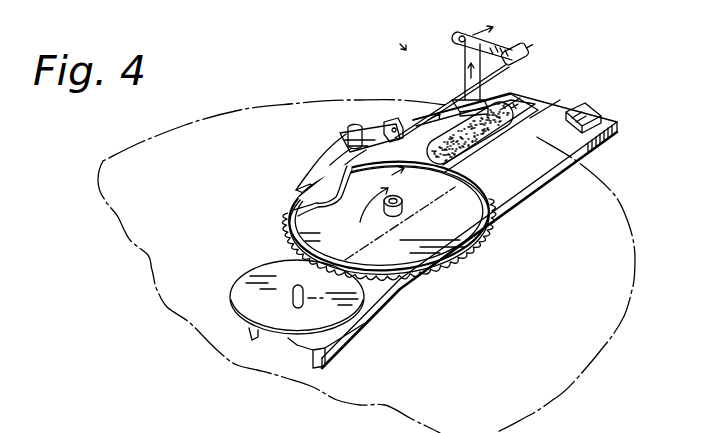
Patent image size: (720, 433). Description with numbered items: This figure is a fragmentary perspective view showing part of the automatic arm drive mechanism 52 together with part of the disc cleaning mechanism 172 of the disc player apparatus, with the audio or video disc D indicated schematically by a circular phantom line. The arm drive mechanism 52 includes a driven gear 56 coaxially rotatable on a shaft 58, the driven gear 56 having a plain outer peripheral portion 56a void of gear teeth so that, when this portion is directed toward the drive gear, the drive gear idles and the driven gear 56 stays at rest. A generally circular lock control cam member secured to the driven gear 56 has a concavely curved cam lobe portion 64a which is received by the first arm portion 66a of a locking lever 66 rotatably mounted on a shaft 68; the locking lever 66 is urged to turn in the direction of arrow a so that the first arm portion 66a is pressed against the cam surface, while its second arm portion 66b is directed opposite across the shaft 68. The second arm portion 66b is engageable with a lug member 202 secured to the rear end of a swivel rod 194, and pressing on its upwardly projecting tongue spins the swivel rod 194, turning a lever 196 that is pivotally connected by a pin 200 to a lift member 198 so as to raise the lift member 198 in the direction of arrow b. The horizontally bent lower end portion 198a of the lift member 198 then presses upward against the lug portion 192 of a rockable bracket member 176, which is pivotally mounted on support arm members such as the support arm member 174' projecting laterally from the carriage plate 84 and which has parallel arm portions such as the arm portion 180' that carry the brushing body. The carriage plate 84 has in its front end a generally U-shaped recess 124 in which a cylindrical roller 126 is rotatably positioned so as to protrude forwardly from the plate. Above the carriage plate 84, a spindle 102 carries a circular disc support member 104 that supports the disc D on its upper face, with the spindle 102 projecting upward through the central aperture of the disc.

The disc cleaning mechanism 172 is at (400, 44).
The lift member 198 is at (458, 62).
The pin 200 is at (482, 30).
The lever 196 is at (508, 48).
The lug portion 192 is at (512, 90).
The arm portion 180' is at (539, 84).
The support arm member 174' is at (576, 85).
The cylindrical roller 126 is at (582, 116).
The U-shaped recess 124 is at (590, 120).
The carriage plate 84 is at (600, 150).
The lug member 202 is at (390, 120).
The horizontally bent lower end portion 198a is at (452, 103).
The arrow b is at (458, 66).
The swivel rod 194 is at (428, 118).
The shaft 68 is at (347, 130).
The second arm portion 66b is at (378, 128).
The locking lever 66 is at (344, 152).
The first arm portion 66a is at (330, 158).
The concavely curved cam lobe portion 64a is at (300, 186).
The arrow a is at (298, 188).
The automatic arm drive mechanism 52 is at (271, 216).
The shaft 58 is at (389, 211).
The plain outer peripheral portion 56a is at (307, 267).
The rockable bracket member 176 is at (503, 150).
The driven gear 56 is at (488, 253).
The disc support member 104 is at (232, 298).
The spindle 102 is at (292, 302).
The disc D is at (598, 353).